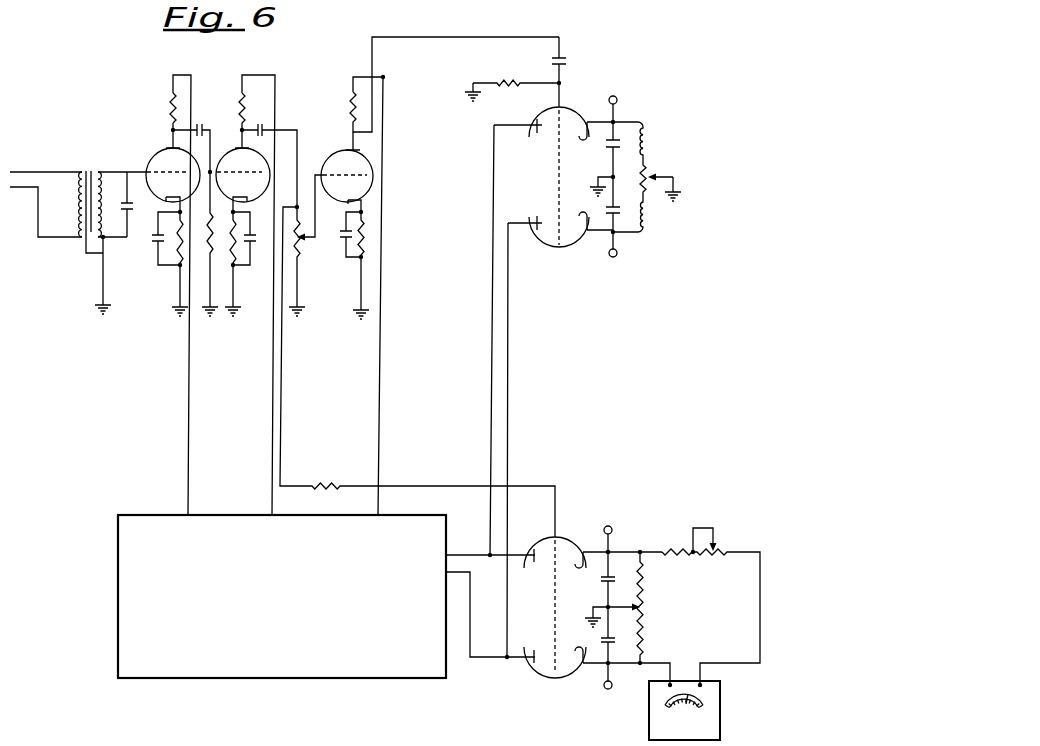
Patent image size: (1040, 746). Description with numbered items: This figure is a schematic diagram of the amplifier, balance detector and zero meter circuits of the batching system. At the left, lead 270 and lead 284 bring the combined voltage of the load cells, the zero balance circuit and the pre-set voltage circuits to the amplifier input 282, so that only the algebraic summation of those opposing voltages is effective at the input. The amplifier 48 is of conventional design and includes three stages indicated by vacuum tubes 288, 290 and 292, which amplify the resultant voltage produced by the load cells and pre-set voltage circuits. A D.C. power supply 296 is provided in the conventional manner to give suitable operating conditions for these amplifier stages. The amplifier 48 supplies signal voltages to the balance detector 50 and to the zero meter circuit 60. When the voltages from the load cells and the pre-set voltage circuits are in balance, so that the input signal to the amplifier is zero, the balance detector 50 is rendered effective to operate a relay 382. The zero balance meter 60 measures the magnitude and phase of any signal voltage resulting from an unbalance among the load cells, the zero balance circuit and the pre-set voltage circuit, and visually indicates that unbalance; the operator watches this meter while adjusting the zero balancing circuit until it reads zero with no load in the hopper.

The amplifier 48 is at (166, 91).
The vacuum tube 288 is at (164, 154).
The vacuum tube 290 is at (256, 167).
The vacuum tube 292 is at (333, 155).
The lead 284 is at (27, 172).
The lead 270 is at (17, 190).
The amplifier input 282 is at (75, 193).
The D.C. power supply 296 is at (118, 525).
The balance detector 50 is at (661, 136).
The relay 382 is at (660, 220).
The zero meter circuit 60 is at (624, 538).